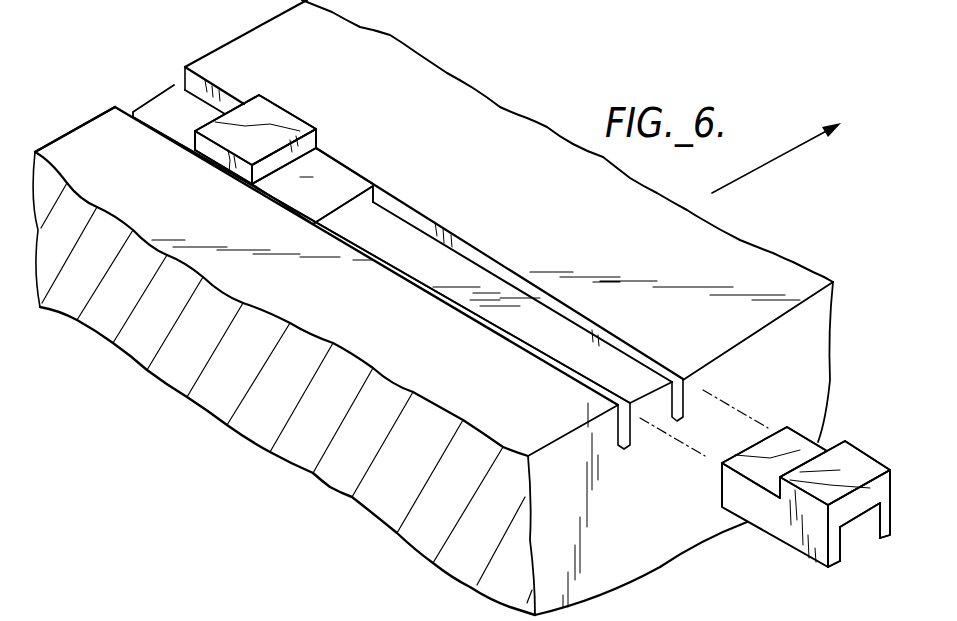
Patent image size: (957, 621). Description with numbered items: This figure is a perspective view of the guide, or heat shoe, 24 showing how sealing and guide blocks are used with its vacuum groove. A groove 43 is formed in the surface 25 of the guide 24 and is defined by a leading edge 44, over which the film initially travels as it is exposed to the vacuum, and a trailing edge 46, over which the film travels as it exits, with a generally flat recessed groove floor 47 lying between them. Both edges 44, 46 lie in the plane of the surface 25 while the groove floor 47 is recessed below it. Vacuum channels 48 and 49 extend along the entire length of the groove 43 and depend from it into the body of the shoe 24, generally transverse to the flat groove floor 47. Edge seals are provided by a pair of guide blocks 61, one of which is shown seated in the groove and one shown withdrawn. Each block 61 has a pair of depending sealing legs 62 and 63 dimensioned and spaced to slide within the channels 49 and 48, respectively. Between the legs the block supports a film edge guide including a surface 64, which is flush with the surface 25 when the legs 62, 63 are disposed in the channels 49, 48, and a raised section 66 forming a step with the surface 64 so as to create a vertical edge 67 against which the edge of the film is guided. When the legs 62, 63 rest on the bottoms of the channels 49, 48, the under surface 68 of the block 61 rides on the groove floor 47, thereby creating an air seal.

The guide (shoe) 24 is at (178, 380).
The surface of guide 25 is at (592, 250).
The groove 43 is at (459, 270).
The leading edge 44 is at (118, 108).
The trailing edge 46 is at (184, 67).
The groove floor 47 is at (552, 360).
The vacuum channel 48 is at (684, 417).
The vacuum channel 49 is at (628, 446).
The guide block 61 is at (296, 93).
The sealing leg 62 is at (827, 569).
The sealing leg 63 is at (892, 538).
The surface 64 is at (341, 168).
The raised section 66 is at (255, 106).
The vertical edge 67 is at (318, 131).
The under surface 68 is at (851, 530).